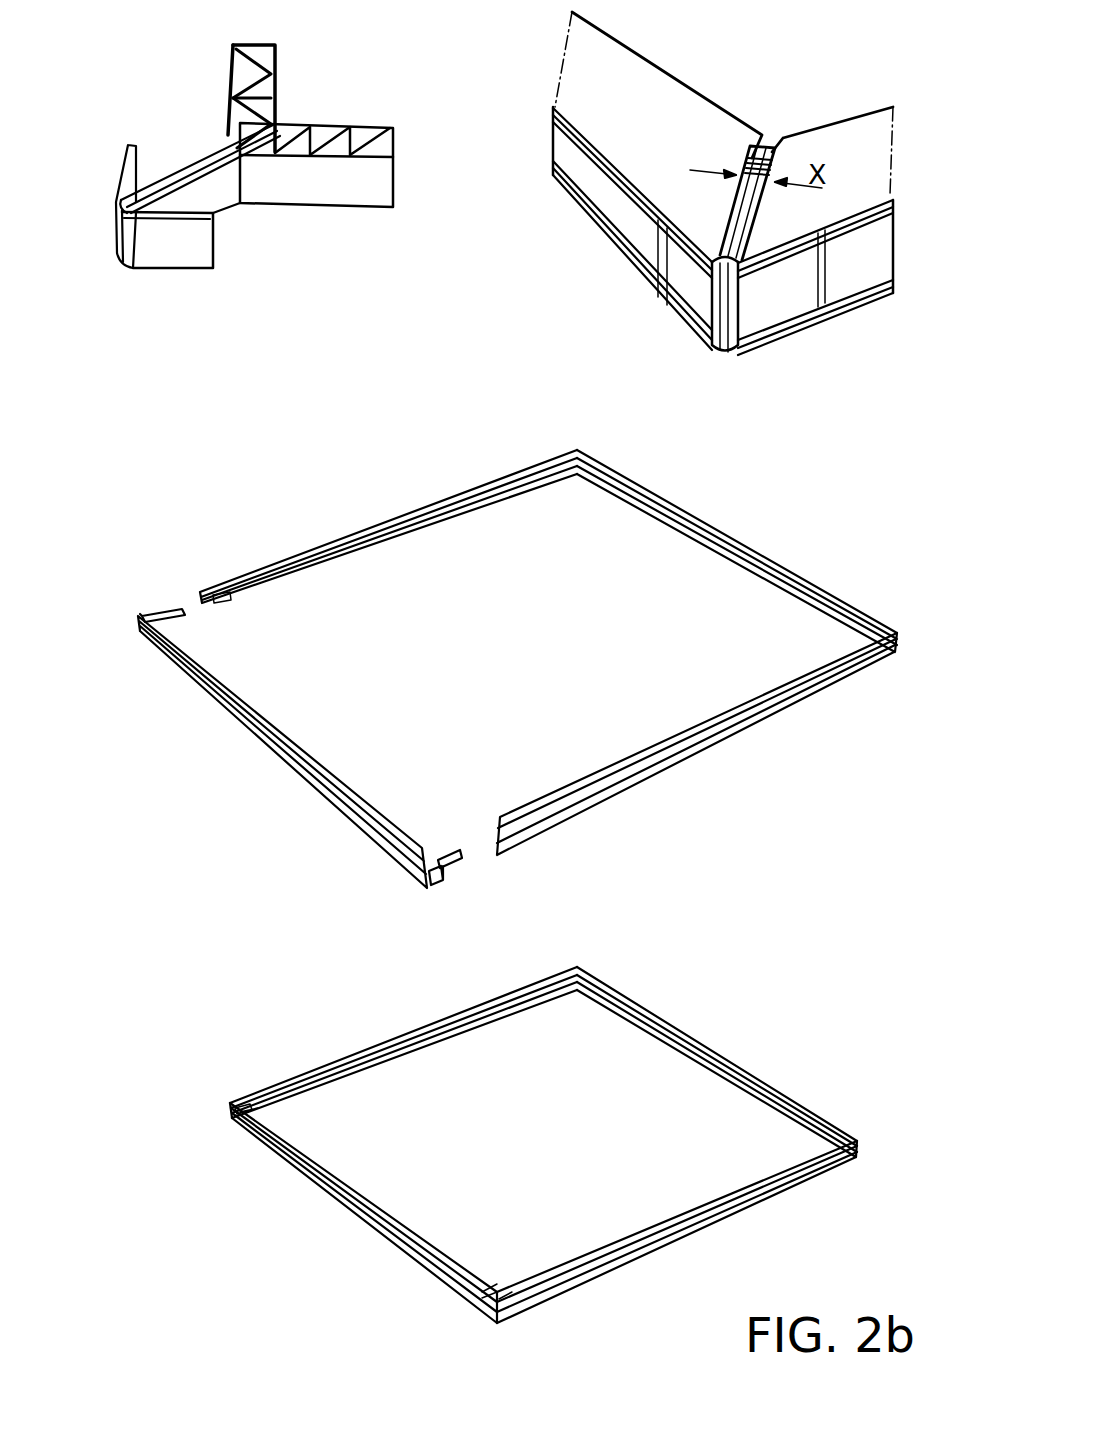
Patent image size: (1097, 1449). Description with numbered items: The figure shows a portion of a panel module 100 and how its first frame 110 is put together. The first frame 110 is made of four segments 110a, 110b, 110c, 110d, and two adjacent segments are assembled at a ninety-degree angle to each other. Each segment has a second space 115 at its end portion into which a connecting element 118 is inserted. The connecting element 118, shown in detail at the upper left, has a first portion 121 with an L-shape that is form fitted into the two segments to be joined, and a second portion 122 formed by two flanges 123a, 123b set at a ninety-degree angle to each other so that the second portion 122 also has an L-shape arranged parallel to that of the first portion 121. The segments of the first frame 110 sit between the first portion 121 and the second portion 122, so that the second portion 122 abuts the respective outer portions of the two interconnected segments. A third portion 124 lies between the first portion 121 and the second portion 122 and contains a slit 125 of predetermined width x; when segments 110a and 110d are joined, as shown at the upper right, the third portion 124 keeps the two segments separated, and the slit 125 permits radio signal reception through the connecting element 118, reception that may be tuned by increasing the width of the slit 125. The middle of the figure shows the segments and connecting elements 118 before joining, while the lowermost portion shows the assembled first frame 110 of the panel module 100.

The panel module 100 is at (548, 880).
The first frame 110 is at (548, 886).
The segment 110a is at (655, 82).
The segment 110b is at (388, 554).
The segment 110c is at (727, 545).
The segment 110d is at (843, 135).
The second space 115 is at (215, 607).
The connecting element 118 is at (373, 126).
The first portion 121 is at (233, 60).
The second portion 122 is at (113, 212).
The flange 123a is at (123, 160).
The flange 123b is at (187, 258).
The third portion 124 is at (183, 160).
The slit 125 is at (740, 222).